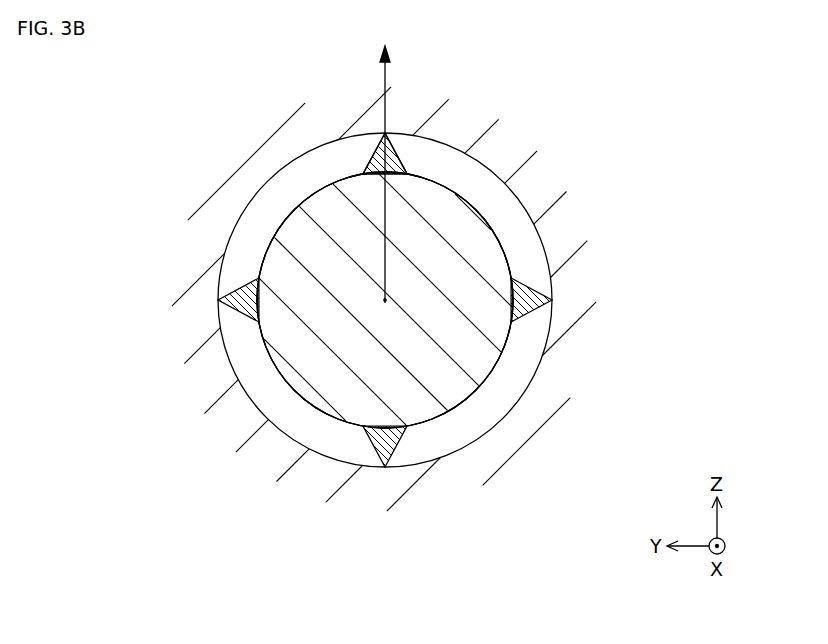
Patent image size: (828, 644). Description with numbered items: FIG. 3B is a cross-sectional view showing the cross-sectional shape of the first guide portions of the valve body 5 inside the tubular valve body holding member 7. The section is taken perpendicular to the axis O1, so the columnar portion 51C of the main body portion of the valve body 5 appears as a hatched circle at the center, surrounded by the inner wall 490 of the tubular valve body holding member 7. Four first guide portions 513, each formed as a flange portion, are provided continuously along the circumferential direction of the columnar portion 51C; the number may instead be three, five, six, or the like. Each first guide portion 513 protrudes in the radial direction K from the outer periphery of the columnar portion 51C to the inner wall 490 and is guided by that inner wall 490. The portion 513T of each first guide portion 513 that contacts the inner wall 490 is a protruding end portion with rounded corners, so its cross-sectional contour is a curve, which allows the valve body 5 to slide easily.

The tubular valve body holding member 7 is at (573, 288).
The inner wall 490 is at (523, 204).
The valve body 5 is at (325, 392).
The columnar portion 51C is at (362, 340).
The first guide portion 513 is at (407, 162).
The portion in contact with the inner wall 513T is at (385, 133).
The radial direction K is at (396, 174).
The axis O1 is at (385, 303).